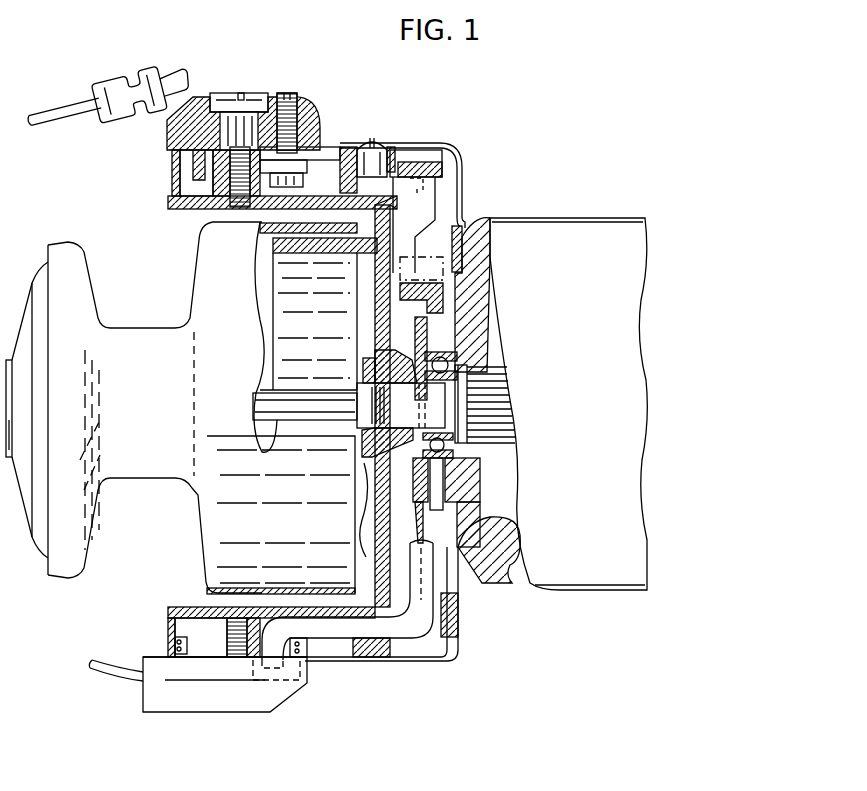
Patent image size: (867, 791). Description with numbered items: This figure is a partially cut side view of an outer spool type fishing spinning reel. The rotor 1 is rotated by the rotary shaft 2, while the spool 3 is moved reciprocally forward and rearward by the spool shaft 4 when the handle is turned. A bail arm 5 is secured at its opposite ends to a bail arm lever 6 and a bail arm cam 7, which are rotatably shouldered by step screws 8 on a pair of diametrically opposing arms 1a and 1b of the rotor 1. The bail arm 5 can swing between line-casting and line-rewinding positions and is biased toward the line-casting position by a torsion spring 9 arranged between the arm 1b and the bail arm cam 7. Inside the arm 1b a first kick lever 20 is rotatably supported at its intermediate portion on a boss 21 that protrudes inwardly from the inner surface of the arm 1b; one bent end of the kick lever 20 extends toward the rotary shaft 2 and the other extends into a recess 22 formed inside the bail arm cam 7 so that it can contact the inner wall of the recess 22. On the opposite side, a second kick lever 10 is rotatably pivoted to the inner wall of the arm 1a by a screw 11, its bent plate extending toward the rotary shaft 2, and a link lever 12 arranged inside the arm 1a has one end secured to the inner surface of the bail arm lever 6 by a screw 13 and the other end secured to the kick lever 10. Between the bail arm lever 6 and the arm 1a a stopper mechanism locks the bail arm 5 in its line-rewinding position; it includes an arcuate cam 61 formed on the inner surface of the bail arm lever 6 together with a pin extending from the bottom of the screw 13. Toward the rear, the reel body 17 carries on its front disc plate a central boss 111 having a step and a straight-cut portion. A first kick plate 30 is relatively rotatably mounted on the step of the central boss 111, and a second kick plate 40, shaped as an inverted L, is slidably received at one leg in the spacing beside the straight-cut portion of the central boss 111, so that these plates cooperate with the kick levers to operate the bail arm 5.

The rotor 1 is at (277, 317).
The arm 1a is at (407, 143).
The arm 1b is at (415, 660).
The rotary shaft 2 is at (363, 403).
The spool 3 is at (147, 443).
The spool shaft 4 is at (267, 400).
The bail arm 5 is at (50, 119).
The bail arm lever 6 is at (303, 115).
The bail arm cam 7 is at (240, 712).
The step screws 8 is at (224, 103).
The torsion spring 9 is at (177, 645).
The second kick lever 10 is at (417, 207).
The screw 11 is at (373, 140).
The link lever 12 is at (323, 162).
The screw 13 is at (283, 93).
The reel body 17 is at (593, 560).
The first kick lever 20 is at (417, 623).
The boss 21 is at (373, 660).
The recess 22 is at (280, 680).
The first kick plate 30 is at (417, 467).
The second kick plate 40 is at (423, 530).
The arcuate cam 61 is at (173, 168).
The central boss 111 is at (452, 314).